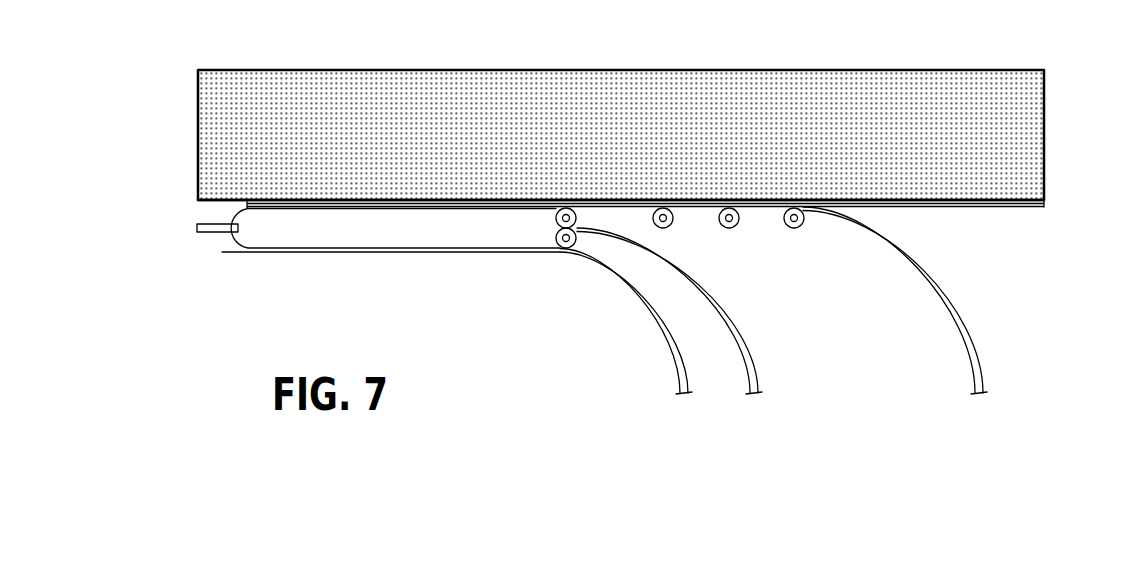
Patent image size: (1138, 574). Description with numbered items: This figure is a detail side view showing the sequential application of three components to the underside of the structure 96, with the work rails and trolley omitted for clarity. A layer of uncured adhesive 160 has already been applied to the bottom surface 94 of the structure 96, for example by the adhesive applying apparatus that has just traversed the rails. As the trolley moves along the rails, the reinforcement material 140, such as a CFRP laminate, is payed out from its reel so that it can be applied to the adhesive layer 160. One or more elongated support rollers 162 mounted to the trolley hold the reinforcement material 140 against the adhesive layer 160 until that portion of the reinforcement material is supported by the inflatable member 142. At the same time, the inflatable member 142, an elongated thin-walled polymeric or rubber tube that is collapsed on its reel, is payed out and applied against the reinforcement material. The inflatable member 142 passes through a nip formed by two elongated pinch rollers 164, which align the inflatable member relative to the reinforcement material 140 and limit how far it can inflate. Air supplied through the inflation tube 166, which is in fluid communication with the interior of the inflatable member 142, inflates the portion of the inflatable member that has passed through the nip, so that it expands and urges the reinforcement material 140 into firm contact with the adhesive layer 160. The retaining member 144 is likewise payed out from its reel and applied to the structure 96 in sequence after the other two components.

The structure 96 is at (1027, 136).
The bottom surface 94 is at (928, 201).
The adhesive layer 160 is at (993, 207).
The inflation tube 166 is at (214, 229).
The pinch rollers 164 is at (557, 225).
The support rollers 162 is at (672, 227).
The retaining member 144 is at (668, 329).
The inflatable member 142 is at (737, 335).
The reinforcement material 140 is at (967, 328).